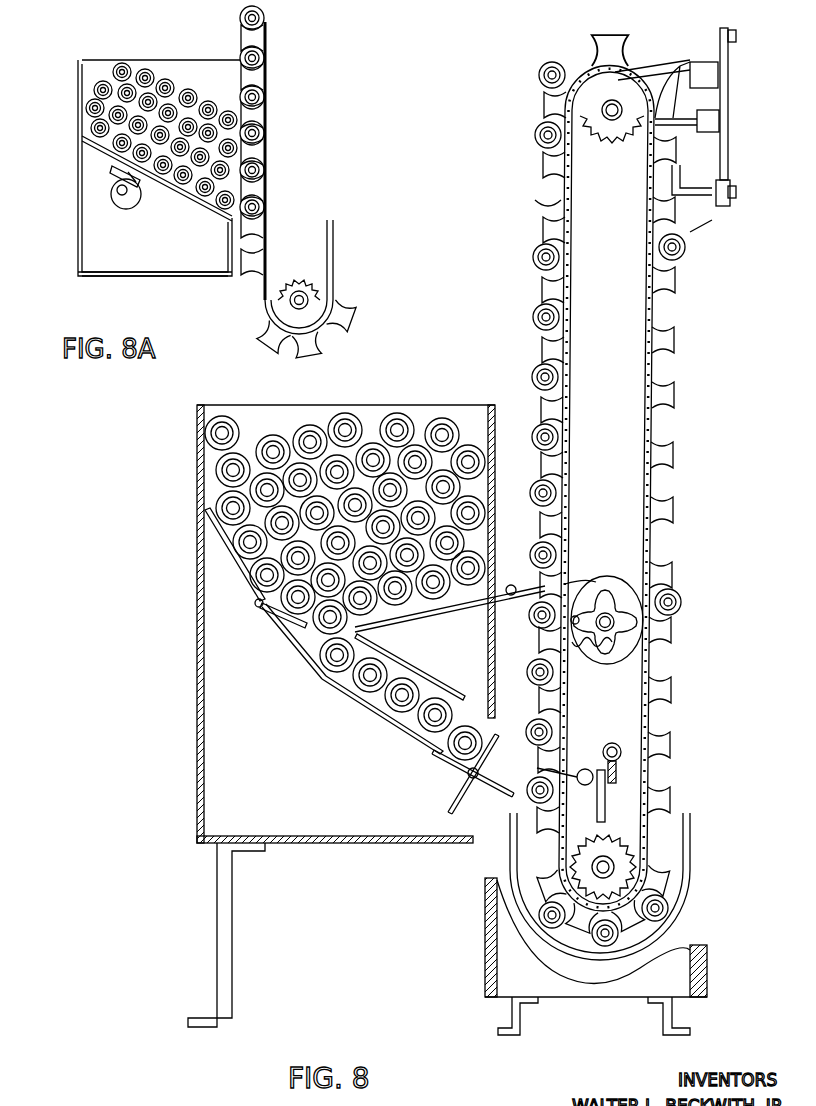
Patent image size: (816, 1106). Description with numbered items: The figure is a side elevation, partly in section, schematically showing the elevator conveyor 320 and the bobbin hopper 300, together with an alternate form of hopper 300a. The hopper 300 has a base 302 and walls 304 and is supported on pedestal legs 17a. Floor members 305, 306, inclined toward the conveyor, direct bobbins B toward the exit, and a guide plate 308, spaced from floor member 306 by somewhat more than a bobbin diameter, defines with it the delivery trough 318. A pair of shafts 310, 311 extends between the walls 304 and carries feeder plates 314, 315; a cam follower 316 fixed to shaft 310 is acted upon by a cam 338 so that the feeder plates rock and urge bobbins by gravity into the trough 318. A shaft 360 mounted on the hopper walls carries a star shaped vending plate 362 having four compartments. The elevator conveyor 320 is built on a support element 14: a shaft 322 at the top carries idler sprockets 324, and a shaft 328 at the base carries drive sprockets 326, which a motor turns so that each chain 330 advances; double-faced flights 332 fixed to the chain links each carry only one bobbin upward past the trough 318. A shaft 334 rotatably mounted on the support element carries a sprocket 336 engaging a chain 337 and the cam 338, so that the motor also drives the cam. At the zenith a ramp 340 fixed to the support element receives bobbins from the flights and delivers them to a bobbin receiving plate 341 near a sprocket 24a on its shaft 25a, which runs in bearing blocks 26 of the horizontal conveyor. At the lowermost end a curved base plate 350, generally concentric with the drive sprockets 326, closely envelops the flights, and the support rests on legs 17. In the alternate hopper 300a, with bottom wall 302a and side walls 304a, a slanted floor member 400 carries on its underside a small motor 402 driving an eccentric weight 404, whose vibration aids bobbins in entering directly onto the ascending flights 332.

In FIG. 8A, the bobbins B is at (185, 88).
In FIG. 8, the support element 14 is at (485, 912).
In FIG. 8, the support feet 17 is at (522, 1020).
In FIG. 8, the pedestal legs 17a is at (216, 956).
In FIG. 8, the sprocket 24a is at (728, 118).
In FIG. 8, the shaft 25a is at (660, 110).
In FIG. 8, the bearing blocks 26 is at (688, 123).
In FIG. 8, the hopper 300 is at (194, 690).
In FIG. 8A, the hopper (alternate construction) 300a is at (74, 229).
In FIG. 8, the base 302 is at (358, 846).
In FIG. 8A, the bottom wall 302a is at (100, 277).
In FIG. 8, the walls 304 is at (200, 478).
In FIG. 8A, the side walls 304a is at (80, 140).
In FIG. 8, the floor member 305 is at (255, 607).
In FIG. 8, the floor member 306 is at (338, 680).
In FIG. 8, the guide plate 308 is at (470, 658).
In FIG. 8, the shaft 310 is at (510, 584).
In FIG. 8, the shaft 311 is at (262, 614).
In FIG. 8, the feeder plate 314 is at (428, 607).
In FIG. 8, the feeder plate 315 is at (290, 634).
In FIG. 8, the cam follower 316 is at (576, 588).
In FIG. 8, the delivery trough 318 is at (388, 698).
In FIG. 8, the elevator conveyor 320 is at (605, 535).
In FIG. 8, the shaft 322 is at (601, 108).
In FIG. 8, the idler sprockets 324 is at (607, 148).
In FIG. 8A, the drive sprockets 326 is at (297, 272).
In FIG. 8, the drive sprockets 326 is at (622, 856).
In FIG. 8, the shaft 328 is at (590, 863).
In FIG. 8A, the chain 330 is at (266, 126).
In FIG. 8, the chain 330 is at (571, 342).
In FIG. 8A, the flights 332 is at (252, 337).
In FIG. 8, the flights 332 is at (572, 484).
In FIG. 8, the shaft 334 is at (620, 626).
In FIG. 8, the sprocket 336 is at (597, 653).
In FIG. 8, the chain 337 is at (627, 661).
In FIG. 8, the cam 338 is at (628, 578).
In FIG. 8, the ramp 340 is at (645, 66).
In FIG. 8, the bobbin receiving plate 341 is at (725, 107).
In FIG. 8, the curved base plate 350 is at (688, 894).
In FIG. 8, the shaft 360 is at (473, 784).
In FIG. 8, the star shaped vending plate 362 is at (458, 795).
In FIG. 8A, the slanted floor member 400 is at (204, 207).
In FIG. 8A, the motor 402 is at (118, 206).
In FIG. 8A, the eccentric weight 404 is at (137, 197).